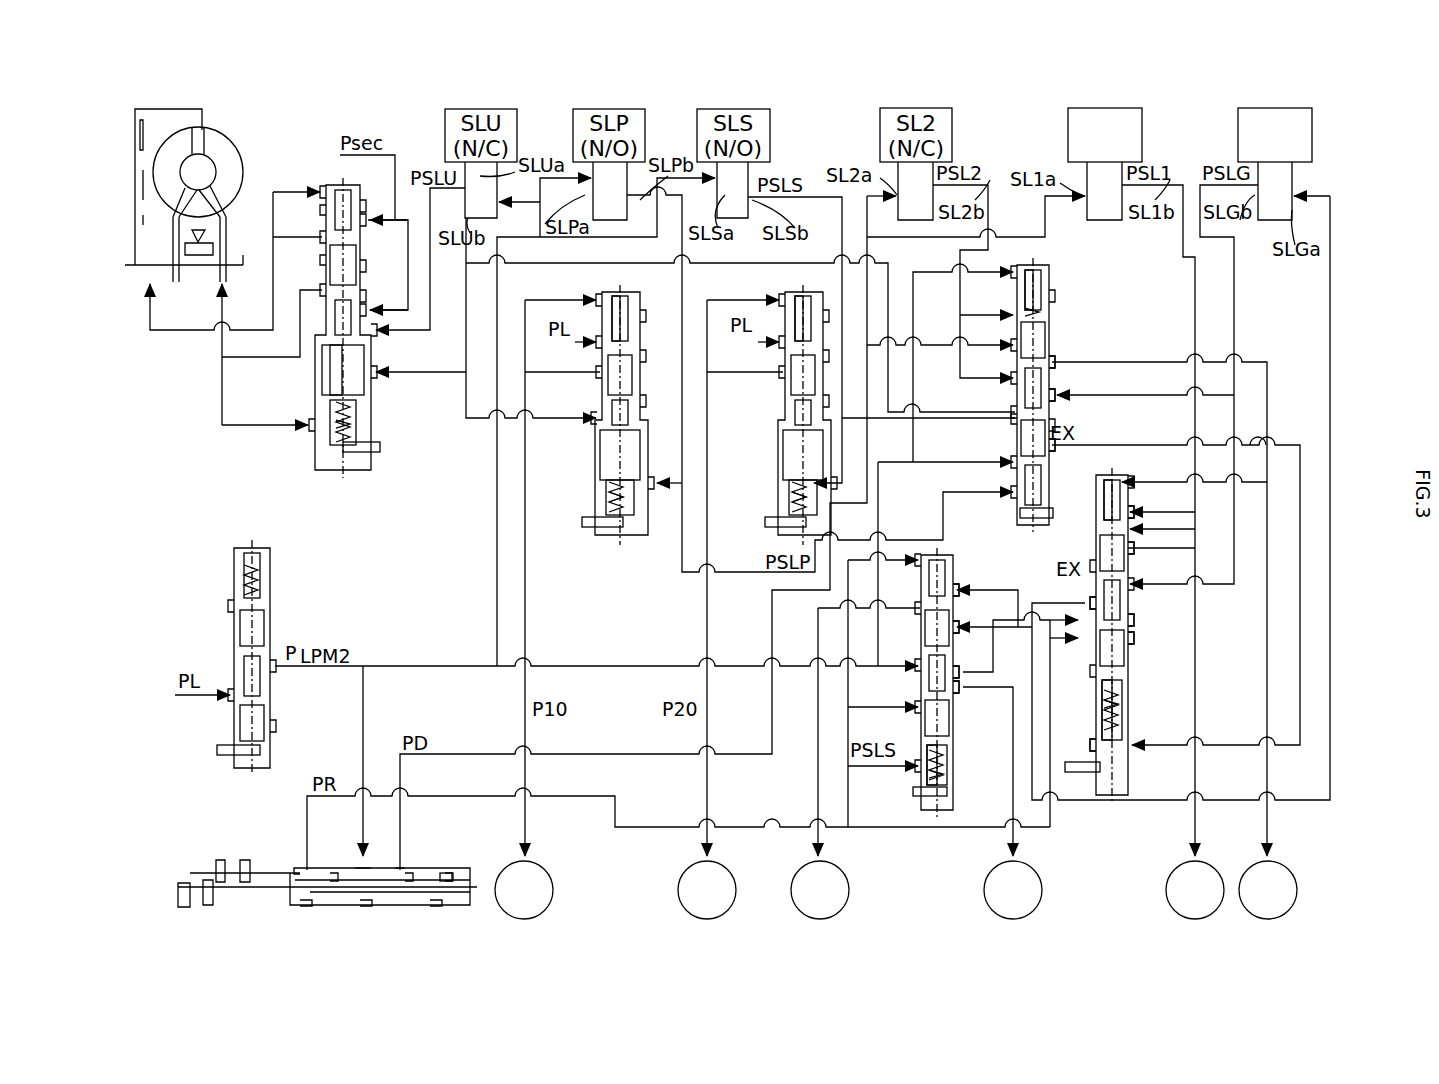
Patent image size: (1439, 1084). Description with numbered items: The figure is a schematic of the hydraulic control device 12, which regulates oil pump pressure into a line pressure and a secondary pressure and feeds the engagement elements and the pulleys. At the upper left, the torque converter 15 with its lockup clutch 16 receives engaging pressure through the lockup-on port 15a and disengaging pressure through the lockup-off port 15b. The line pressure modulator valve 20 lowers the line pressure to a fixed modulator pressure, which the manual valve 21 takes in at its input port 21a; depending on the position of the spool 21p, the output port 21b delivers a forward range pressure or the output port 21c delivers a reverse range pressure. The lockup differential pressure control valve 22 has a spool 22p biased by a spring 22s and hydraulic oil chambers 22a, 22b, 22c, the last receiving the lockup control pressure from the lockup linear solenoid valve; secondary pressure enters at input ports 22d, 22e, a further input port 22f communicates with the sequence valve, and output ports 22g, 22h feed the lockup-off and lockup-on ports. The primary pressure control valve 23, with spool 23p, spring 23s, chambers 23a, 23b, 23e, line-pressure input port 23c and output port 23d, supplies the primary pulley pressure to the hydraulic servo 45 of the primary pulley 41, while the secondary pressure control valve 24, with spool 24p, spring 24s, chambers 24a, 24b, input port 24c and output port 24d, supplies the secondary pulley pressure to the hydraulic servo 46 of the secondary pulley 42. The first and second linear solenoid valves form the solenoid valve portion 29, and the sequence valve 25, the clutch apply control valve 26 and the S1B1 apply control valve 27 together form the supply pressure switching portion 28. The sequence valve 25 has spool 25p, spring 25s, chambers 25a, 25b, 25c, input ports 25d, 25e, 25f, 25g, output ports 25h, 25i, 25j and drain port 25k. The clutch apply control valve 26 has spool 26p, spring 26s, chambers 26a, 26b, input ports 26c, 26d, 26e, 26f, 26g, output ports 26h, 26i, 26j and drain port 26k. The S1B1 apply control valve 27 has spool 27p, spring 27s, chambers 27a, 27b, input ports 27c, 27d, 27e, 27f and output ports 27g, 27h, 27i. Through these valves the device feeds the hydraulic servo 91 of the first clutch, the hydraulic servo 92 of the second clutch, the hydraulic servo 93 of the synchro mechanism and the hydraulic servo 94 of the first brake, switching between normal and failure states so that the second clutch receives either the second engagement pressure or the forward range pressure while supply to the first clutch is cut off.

The hydraulic control device 12 is at (1332, 145).
The torque converter 15 is at (168, 355).
The lockup-on port 15a is at (216, 280).
The lockup-off port 15b is at (145, 280).
The lockup clutch 16 is at (139, 135).
The line pressure modulator valve 20 is at (205, 578).
The manual valve 21 is at (235, 828).
The input port 21a is at (358, 867).
The output port 21b is at (405, 867).
The output port 21c is at (300, 867).
The spool 21p is at (445, 872).
The lockup differential pressure control valve 22 is at (395, 462).
The first hydraulic oil chamber 22a is at (325, 185).
The second hydraulic oil chamber 22b is at (312, 432).
The third hydraulic oil chamber 22c is at (378, 335).
The first input port 22d is at (366, 226).
The second input port 22e is at (366, 305).
The third input port 22f is at (378, 378).
The first output port 22g is at (322, 237).
The second output port 22h is at (322, 290).
The spool 22p is at (322, 355).
The spring 22s is at (355, 418).
The primary pressure control valve 23 is at (580, 555).
The first hydraulic oil chamber 23a is at (598, 486).
The second hydraulic oil chamber 23b is at (600, 292).
The input port 23c is at (598, 347).
The output port 23d is at (600, 375).
The third hydraulic oil chamber 23e is at (596, 425).
The spool 23p is at (632, 322).
The spring 23s is at (604, 506).
The secondary pressure control valve 24 is at (750, 555).
The first hydraulic oil chamber 24a is at (781, 486).
The second hydraulic oil chamber 24b is at (783, 292).
The input port 24c is at (781, 347).
The output port 24d is at (783, 375).
The spool 24p is at (815, 322).
The spring 24s is at (787, 500).
The sequence valve 25 is at (1105, 295).
The first hydraulic oil chamber 25a is at (1015, 498).
The second hydraulic oil chamber 25b is at (1045, 266).
The third hydraulic oil chamber 25c is at (1052, 296).
The first input port 25d is at (1012, 465).
The second input port 25e is at (1056, 398).
The third input port 25f is at (1012, 375).
The fourth input port 25g is at (1052, 340).
The first output port 25h is at (1056, 447).
The second output port 25i is at (1012, 410).
The third output port 25j is at (1056, 363).
The drain port 25k is at (1012, 423).
The spool 25p is at (1042, 285).
The spring 25s is at (1020, 282).
The clutch apply control valve 26 is at (1100, 820).
The first hydraulic oil chamber 26a is at (1118, 478).
The second hydraulic oil chamber 26b is at (1090, 745).
The first input port 26c is at (1134, 512).
The second input port 26d is at (1100, 530).
The third input port 26e is at (1134, 590).
The fourth input port 26f is at (1134, 622).
The fifth input port 26g is at (1134, 640).
The first output port 26h is at (1134, 552).
The second output port 26i is at (1090, 603).
The third output port 26j is at (1092, 660).
The drain port 26k is at (1095, 566).
The spool 26p is at (1116, 720).
The spring 26s is at (1122, 678).
The S1B1 apply control valve 27 is at (930, 840).
The first hydraulic oil chamber 27a is at (945, 556).
The second hydraulic oil chamber 27b is at (915, 760).
The first input port 27c is at (960, 588).
The second input port 27d is at (960, 625).
The third input port 27e is at (915, 664).
The fourth input port 27f is at (915, 702).
The first output port 27g is at (915, 608).
The second output port 27h is at (962, 662).
The third output port 27i is at (960, 690).
The spool 27p is at (948, 745).
The spring 27s is at (948, 780).
The supply pressure switching portion 28 is at (1258, 350).
The solenoid valve portion 29 is at (1152, 128).
The primary pulley 41 is at (524, 890).
The secondary pulley 42 is at (707, 890).
The hydraulic servo 45 is at (548, 868).
The hydraulic servo 46 is at (730, 868).
The hydraulic servo 91 is at (1172, 868).
The hydraulic servo 92 is at (1290, 868).
The hydraulic servo 93 is at (992, 868).
The hydraulic servo 94 is at (842, 868).